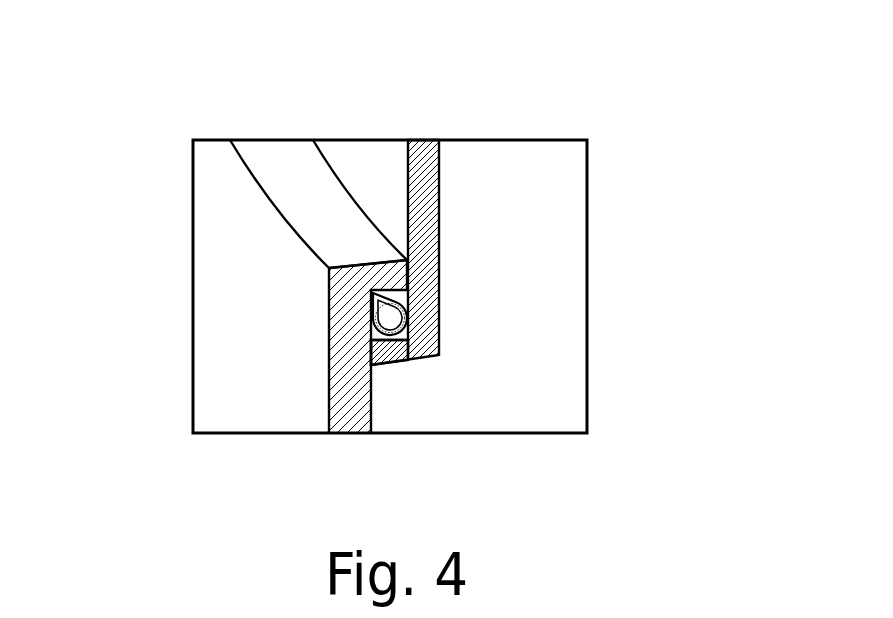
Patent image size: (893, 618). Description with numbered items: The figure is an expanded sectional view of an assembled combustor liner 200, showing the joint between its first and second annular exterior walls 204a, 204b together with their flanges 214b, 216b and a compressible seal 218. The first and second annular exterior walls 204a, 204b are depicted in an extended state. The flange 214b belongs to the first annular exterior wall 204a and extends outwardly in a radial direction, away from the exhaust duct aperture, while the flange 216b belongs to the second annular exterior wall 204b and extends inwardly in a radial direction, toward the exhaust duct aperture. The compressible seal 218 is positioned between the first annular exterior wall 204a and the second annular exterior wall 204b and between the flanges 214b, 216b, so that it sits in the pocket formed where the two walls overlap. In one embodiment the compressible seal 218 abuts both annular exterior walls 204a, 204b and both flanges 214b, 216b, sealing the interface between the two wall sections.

The combustor liner 200 is at (468, 225).
The first annular exterior wall 204a is at (428, 180).
The second annular exterior wall 204b is at (348, 413).
The flange 214b is at (393, 350).
The flange 216b is at (407, 273).
The compressible seal 218 is at (392, 318).